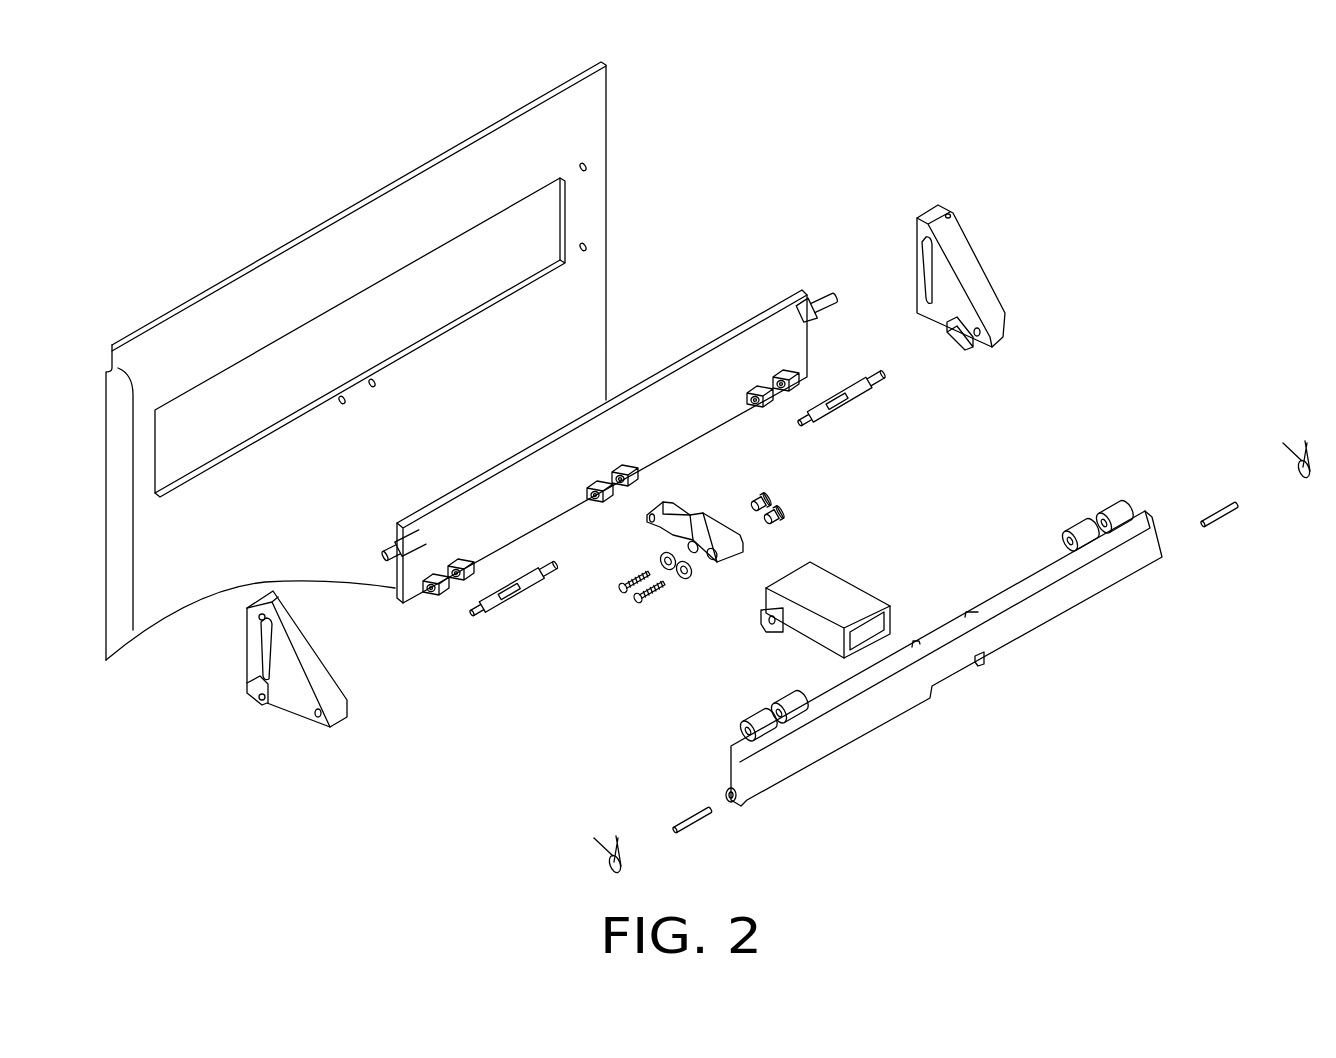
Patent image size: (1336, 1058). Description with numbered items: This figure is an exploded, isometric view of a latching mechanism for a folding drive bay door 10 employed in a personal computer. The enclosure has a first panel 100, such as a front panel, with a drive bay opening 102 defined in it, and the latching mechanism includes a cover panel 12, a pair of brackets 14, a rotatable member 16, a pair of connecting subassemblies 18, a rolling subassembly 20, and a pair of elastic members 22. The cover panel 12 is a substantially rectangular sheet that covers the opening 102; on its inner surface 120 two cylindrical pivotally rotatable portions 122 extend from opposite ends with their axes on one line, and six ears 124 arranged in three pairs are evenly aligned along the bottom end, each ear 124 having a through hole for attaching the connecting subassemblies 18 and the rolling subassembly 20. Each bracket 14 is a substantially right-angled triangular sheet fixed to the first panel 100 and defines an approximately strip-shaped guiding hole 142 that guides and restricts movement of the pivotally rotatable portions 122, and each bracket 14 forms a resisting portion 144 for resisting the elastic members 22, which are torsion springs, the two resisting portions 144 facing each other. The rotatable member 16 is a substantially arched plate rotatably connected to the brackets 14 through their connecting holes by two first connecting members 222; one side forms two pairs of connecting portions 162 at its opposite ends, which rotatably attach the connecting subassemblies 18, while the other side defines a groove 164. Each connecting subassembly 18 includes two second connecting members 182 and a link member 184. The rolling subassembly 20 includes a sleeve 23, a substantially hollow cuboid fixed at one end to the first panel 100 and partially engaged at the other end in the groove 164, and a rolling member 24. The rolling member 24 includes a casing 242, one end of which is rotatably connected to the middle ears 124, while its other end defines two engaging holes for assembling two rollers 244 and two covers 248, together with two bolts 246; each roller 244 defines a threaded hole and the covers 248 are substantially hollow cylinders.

The latching mechanism for folding drive bay door 10 is at (969, 185).
The cover panel 12 is at (740, 320).
The bracket 14 is at (300, 705).
The rotatable member 16 is at (1113, 575).
The connecting subassembly 18 is at (685, 516).
The rolling subassembly 20 is at (941, 554).
The elastic member 22 is at (1305, 440).
The sleeve 23 is at (845, 595).
The rolling member 24 is at (782, 522).
The first panel 100 is at (592, 132).
The drive bay opening 102 is at (353, 333).
The inner surface 120 is at (790, 340).
The pivotally rotatable portion 122 is at (390, 560).
The ear 124 is at (637, 476).
The guiding hole 142 is at (925, 262).
The resisting portion 144 is at (956, 340).
The connecting portion 162 is at (1115, 512).
The groove 164 is at (956, 672).
The second connecting member 182 is at (482, 615).
The link member 184 is at (500, 598).
The first connecting member 222 is at (1218, 508).
The casing 242 is at (665, 525).
The roller 244 is at (768, 527).
The bolt 246 is at (642, 602).
The cover 248 is at (687, 579).